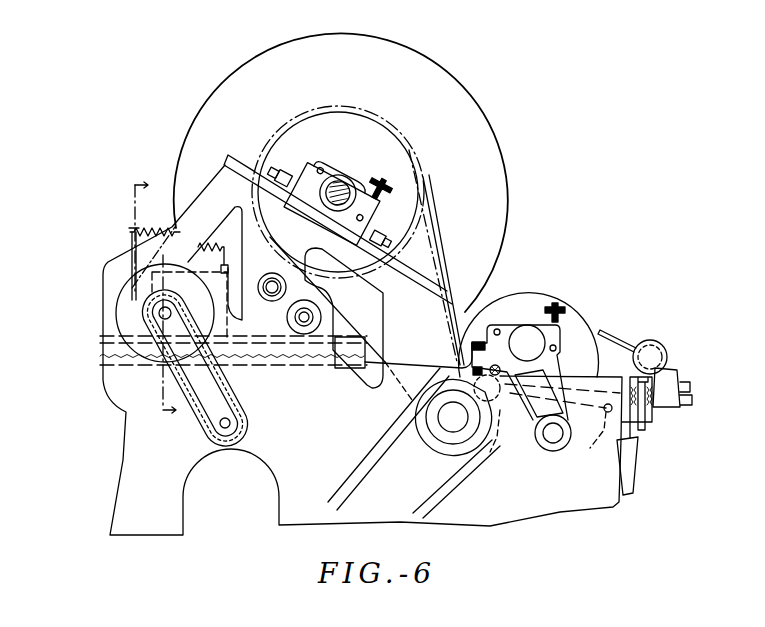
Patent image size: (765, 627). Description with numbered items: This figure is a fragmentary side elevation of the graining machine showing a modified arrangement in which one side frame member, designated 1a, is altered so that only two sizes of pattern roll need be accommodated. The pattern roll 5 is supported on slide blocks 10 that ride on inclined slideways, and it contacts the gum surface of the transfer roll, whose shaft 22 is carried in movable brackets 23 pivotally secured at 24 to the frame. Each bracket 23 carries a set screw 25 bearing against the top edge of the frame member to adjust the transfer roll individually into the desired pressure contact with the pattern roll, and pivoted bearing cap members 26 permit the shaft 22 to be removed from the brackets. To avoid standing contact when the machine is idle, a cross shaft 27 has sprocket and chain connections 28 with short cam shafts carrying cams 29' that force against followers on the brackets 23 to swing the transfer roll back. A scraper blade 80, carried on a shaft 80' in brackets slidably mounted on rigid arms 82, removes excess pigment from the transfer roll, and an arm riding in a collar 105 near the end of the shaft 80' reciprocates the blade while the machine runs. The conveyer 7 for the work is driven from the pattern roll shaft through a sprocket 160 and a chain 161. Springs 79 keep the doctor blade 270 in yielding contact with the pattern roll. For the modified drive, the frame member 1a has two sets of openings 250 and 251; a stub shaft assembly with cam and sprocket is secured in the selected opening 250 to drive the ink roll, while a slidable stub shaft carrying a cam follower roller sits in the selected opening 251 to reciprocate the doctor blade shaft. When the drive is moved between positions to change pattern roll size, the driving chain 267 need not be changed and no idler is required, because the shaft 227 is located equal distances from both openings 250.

The side frame member 1a is at (361, 350).
The pattern roll 5 is at (341, 172).
The conveyer 7 is at (179, 300).
The slide block 10 is at (311, 182).
The transfer roll shaft 22 is at (528, 335).
The movable bracket 23 is at (553, 443).
The pivot 24 is at (545, 452).
The set screw 25 is at (480, 337).
The bearing cap member 26 is at (521, 317).
The cross shaft 27 is at (608, 412).
The sprocket and chain connections 28 is at (598, 432).
The cam 29' is at (467, 418).
The spring 79 is at (164, 228).
The scraper blade 80 is at (617, 332).
The scraper blade shaft 80' is at (673, 356).
The rigid arm 82 is at (653, 423).
The collar 105 is at (680, 373).
The sprocket 160 is at (408, 242).
The chain 161 is at (435, 225).
The shaft 227 is at (230, 422).
The opening 250 is at (294, 320).
The opening 251 is at (274, 275).
The driving chain 267 is at (238, 389).
The doctor blade 270 is at (186, 262).